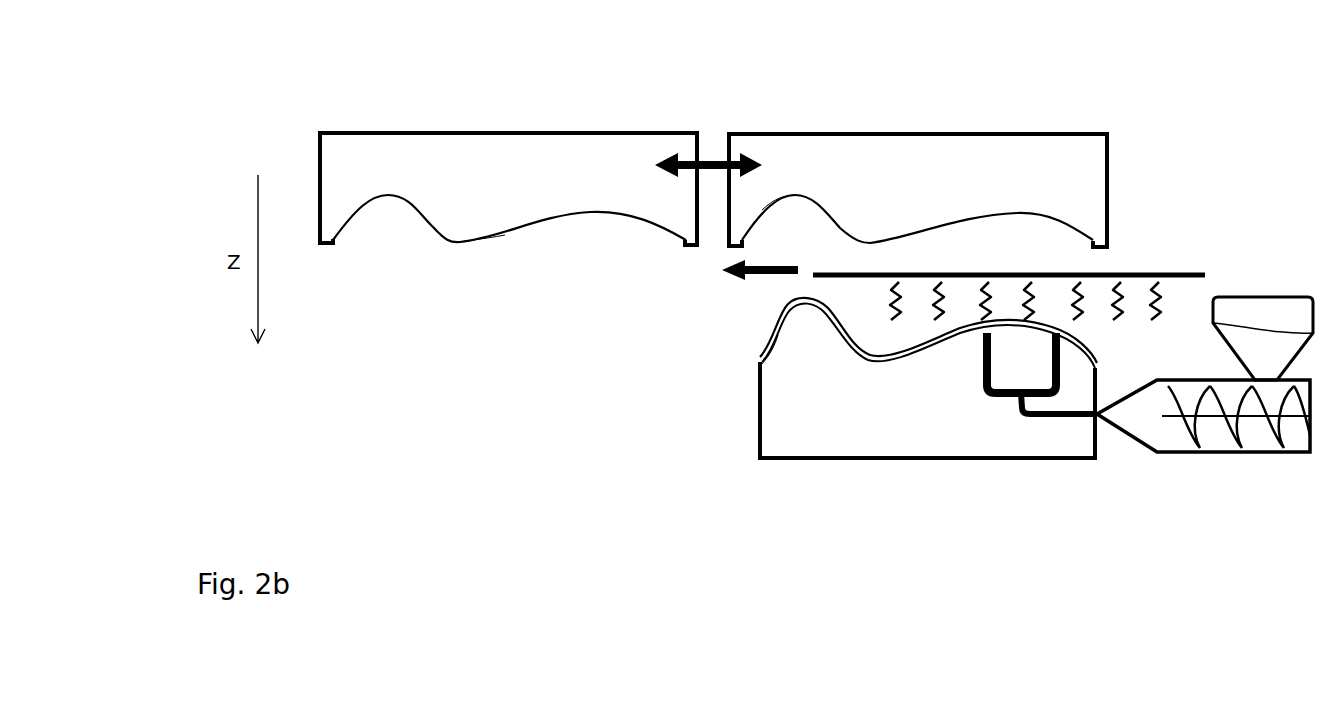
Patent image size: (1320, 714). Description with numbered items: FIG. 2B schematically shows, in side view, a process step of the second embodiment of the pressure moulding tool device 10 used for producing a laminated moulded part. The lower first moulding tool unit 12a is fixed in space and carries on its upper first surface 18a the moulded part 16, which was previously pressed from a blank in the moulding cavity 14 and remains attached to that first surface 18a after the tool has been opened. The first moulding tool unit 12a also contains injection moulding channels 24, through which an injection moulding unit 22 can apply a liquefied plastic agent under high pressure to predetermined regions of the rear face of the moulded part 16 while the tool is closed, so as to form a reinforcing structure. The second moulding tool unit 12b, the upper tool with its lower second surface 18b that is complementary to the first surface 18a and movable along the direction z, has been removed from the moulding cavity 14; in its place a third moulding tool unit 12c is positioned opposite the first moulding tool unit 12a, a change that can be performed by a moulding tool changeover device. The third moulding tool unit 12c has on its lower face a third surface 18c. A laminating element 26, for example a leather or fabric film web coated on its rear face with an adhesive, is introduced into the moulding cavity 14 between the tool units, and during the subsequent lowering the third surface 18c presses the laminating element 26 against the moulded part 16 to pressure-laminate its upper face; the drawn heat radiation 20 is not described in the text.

The pressure moulding tool device 10 is at (281, 153).
The first moulding tool unit 12a is at (907, 432).
The second moulding tool unit 12b is at (518, 163).
The third moulding tool unit 12c is at (965, 180).
The moulding cavity 14 is at (1012, 249).
The moulded part 16 is at (775, 328).
The first surface 18a is at (786, 324).
The second surface 18b is at (497, 237).
The third surface 18c is at (797, 196).
The heat radiation 20 is at (1025, 301).
The injection moulding unit 22 is at (1246, 472).
The injection moulding channels 24 is at (1062, 420).
The laminating element 26 is at (1151, 272).